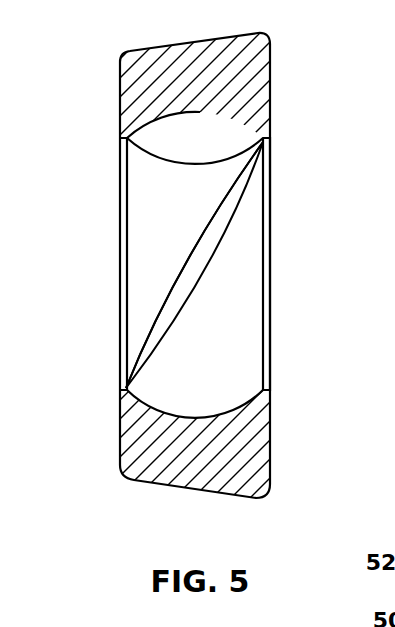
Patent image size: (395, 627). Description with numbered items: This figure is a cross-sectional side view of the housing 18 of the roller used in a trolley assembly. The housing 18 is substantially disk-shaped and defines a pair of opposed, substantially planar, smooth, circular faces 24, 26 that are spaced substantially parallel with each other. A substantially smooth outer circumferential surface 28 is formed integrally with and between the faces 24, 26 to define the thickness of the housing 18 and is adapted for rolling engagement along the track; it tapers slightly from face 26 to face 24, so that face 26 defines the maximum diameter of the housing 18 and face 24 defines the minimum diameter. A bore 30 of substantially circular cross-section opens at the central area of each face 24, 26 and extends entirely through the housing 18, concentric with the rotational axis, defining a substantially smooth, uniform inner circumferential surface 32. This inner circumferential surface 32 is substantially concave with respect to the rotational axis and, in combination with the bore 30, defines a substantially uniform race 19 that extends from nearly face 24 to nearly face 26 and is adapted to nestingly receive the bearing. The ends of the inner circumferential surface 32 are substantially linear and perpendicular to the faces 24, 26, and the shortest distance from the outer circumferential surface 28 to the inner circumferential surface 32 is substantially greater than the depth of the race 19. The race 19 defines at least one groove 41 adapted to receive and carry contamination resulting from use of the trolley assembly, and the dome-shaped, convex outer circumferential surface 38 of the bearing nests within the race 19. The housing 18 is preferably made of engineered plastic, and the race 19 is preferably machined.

The housing 18 is at (112, 272).
The race 19 is at (158, 138).
The face 24 is at (120, 425).
The face 26 is at (272, 430).
The outer circumferential surface 28 is at (192, 493).
The bore 30 is at (265, 216).
The inner circumferential surface 32 is at (192, 108).
The outer circumferential surface 38 is at (121, 83).
The groove 41 is at (163, 327).